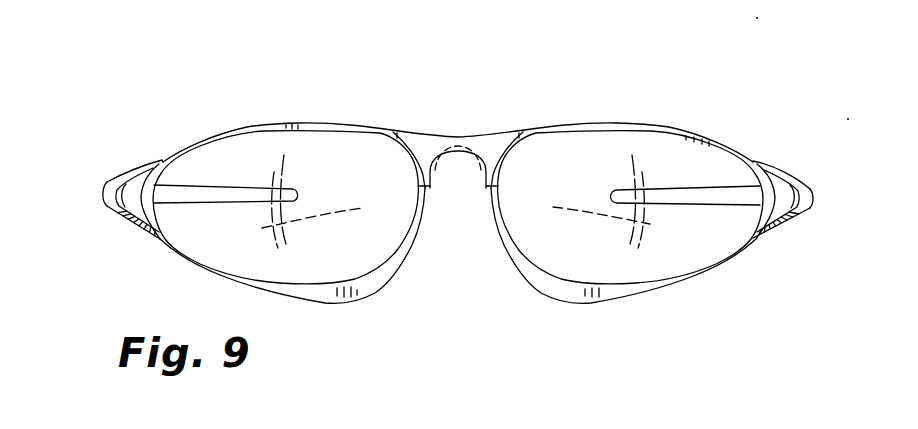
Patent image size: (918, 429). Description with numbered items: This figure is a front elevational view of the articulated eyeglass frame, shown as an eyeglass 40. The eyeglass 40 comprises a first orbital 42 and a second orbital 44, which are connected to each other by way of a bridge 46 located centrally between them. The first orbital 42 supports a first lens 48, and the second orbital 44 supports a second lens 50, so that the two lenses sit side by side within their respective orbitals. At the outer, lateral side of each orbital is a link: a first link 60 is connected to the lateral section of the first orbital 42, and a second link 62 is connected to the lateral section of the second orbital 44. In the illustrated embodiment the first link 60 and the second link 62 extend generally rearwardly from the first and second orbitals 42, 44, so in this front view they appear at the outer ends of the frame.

The eyeglass 40 is at (633, 78).
The first orbital 42 is at (247, 124).
The second orbital 44 is at (573, 123).
The bridge 46 is at (455, 143).
The first lens 48 is at (345, 157).
The second lens 50 is at (653, 262).
The first link 60 is at (102, 192).
The second link 62 is at (814, 190).